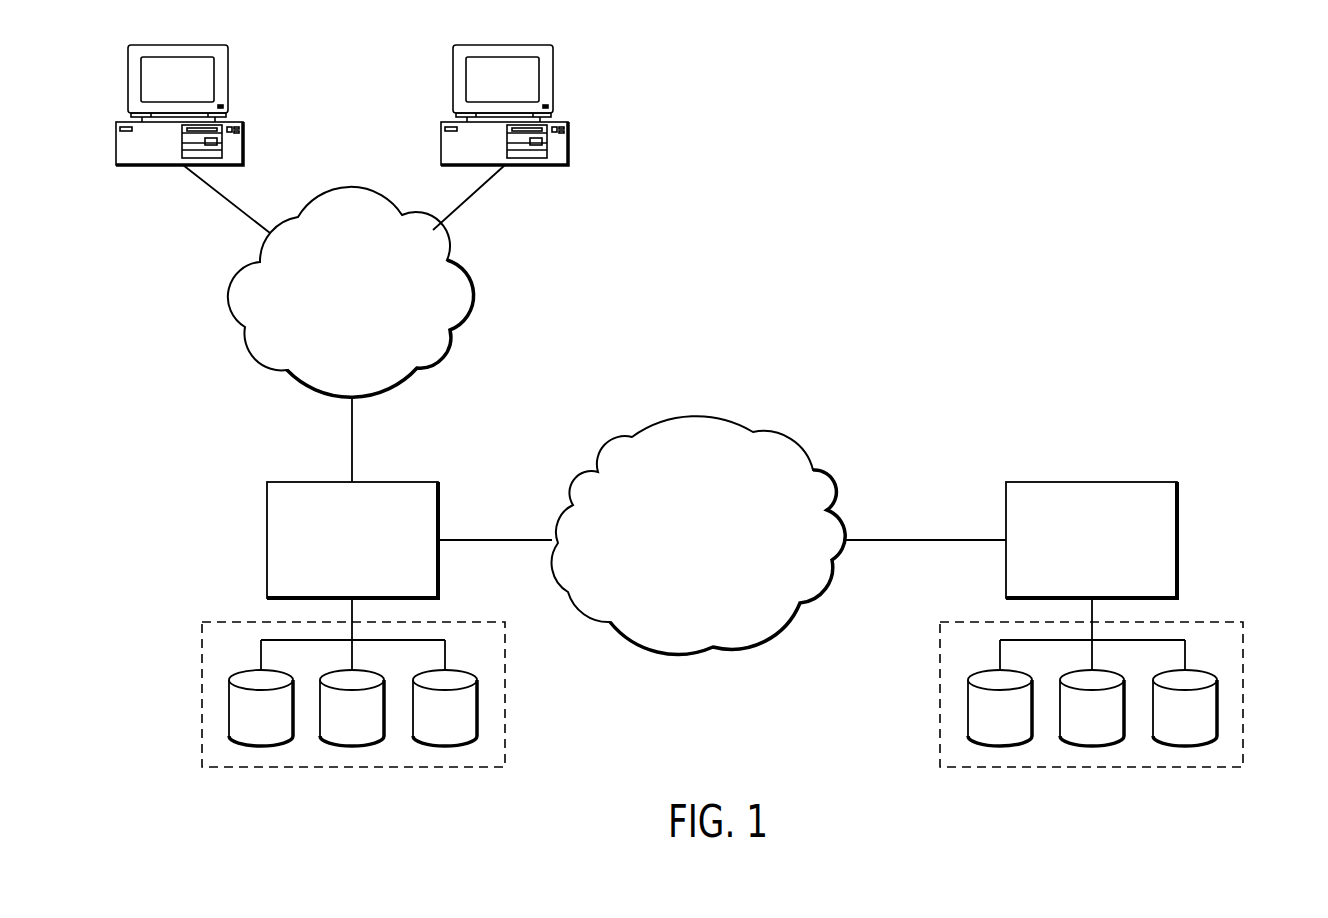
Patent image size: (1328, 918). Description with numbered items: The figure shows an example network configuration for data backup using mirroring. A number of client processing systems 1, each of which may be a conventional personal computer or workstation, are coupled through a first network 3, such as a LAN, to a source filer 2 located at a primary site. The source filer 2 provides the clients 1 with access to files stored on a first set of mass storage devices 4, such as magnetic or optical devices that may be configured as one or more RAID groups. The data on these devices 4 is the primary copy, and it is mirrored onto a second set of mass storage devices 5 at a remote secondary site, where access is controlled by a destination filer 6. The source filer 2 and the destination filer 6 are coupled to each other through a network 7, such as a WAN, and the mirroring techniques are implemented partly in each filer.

The client processing systems 1 is at (245, 145).
The source filer 2 is at (393, 480).
The first network 3 is at (462, 275).
The first set of mass storage devices 4 is at (505, 695).
The second set of mass storage devices 5 is at (1243, 695).
The destination filer 6 is at (1132, 480).
The network 7 is at (833, 577).